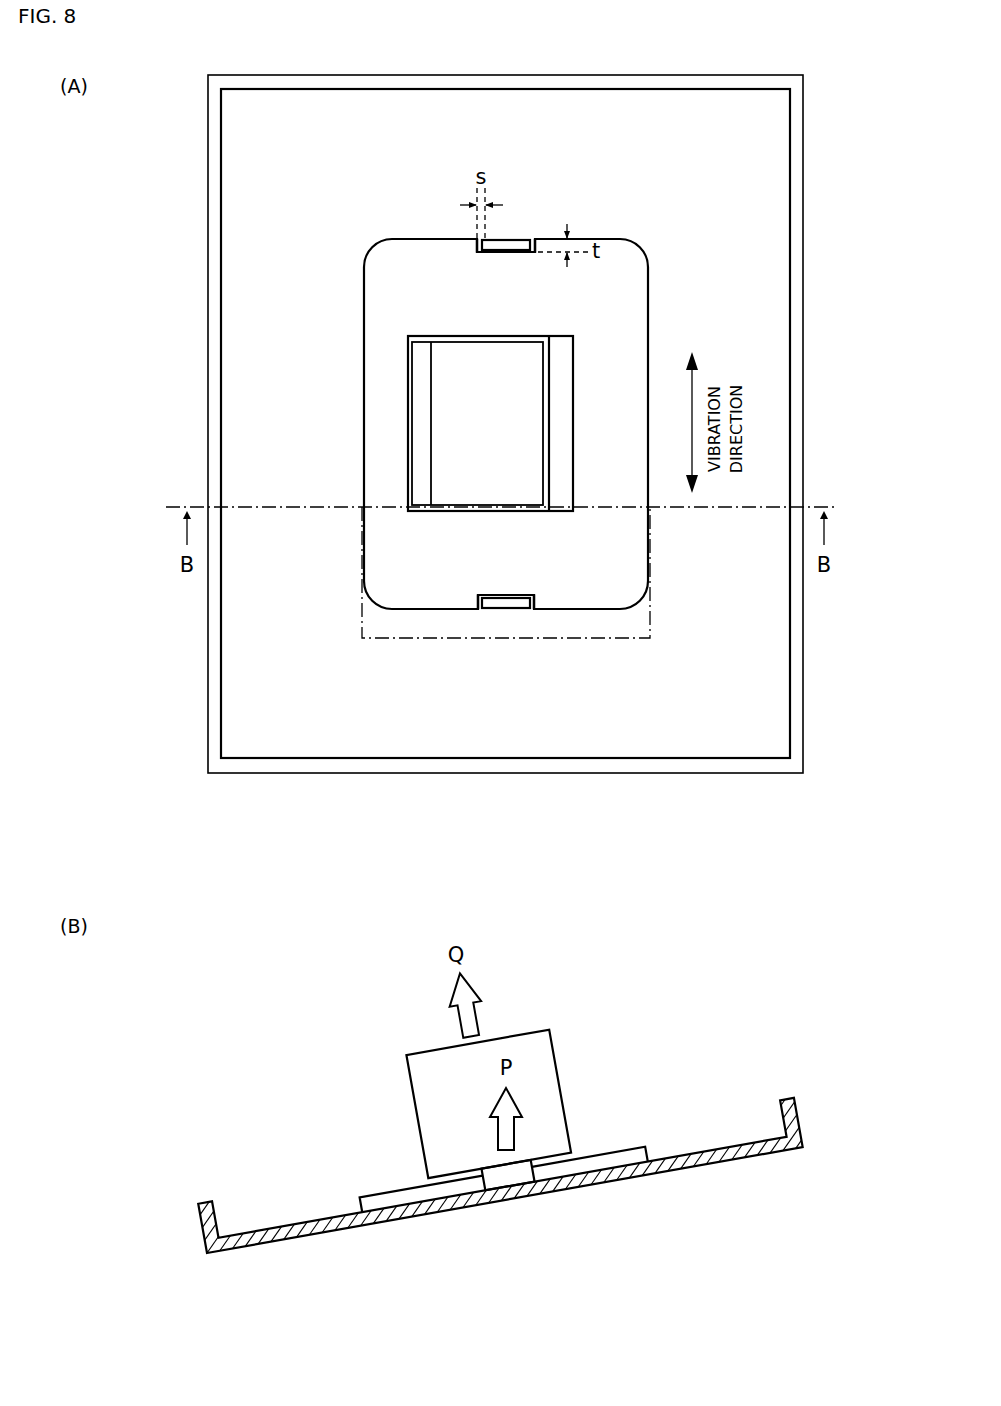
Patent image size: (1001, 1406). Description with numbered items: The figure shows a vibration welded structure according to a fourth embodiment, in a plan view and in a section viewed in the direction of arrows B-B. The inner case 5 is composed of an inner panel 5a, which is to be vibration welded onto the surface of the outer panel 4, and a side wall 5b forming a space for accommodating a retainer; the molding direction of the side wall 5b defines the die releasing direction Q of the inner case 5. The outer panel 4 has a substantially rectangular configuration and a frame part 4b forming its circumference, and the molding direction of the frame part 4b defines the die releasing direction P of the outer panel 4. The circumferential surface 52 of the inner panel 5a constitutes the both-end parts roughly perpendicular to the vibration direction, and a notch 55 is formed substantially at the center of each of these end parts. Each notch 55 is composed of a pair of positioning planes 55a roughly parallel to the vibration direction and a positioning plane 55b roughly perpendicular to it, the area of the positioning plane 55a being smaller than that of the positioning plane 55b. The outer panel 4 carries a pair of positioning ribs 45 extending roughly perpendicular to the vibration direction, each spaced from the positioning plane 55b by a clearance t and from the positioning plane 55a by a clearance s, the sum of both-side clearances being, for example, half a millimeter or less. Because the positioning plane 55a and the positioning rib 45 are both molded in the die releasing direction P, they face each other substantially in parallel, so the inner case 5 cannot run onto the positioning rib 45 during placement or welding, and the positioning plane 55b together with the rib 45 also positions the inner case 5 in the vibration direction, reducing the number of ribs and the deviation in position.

The outer panel 4 is at (263, 647).
The frame part 4b is at (207, 193).
The inner case 5 is at (334, 376).
The inner panel 5a is at (383, 416).
The side wall 5b is at (566, 385).
The positioning rib 45 is at (511, 239).
The circumferential surface 52 is at (438, 238).
The notch 55 is at (524, 266).
The positioning plane 55a is at (536, 240).
The positioning plane 55b is at (503, 253).